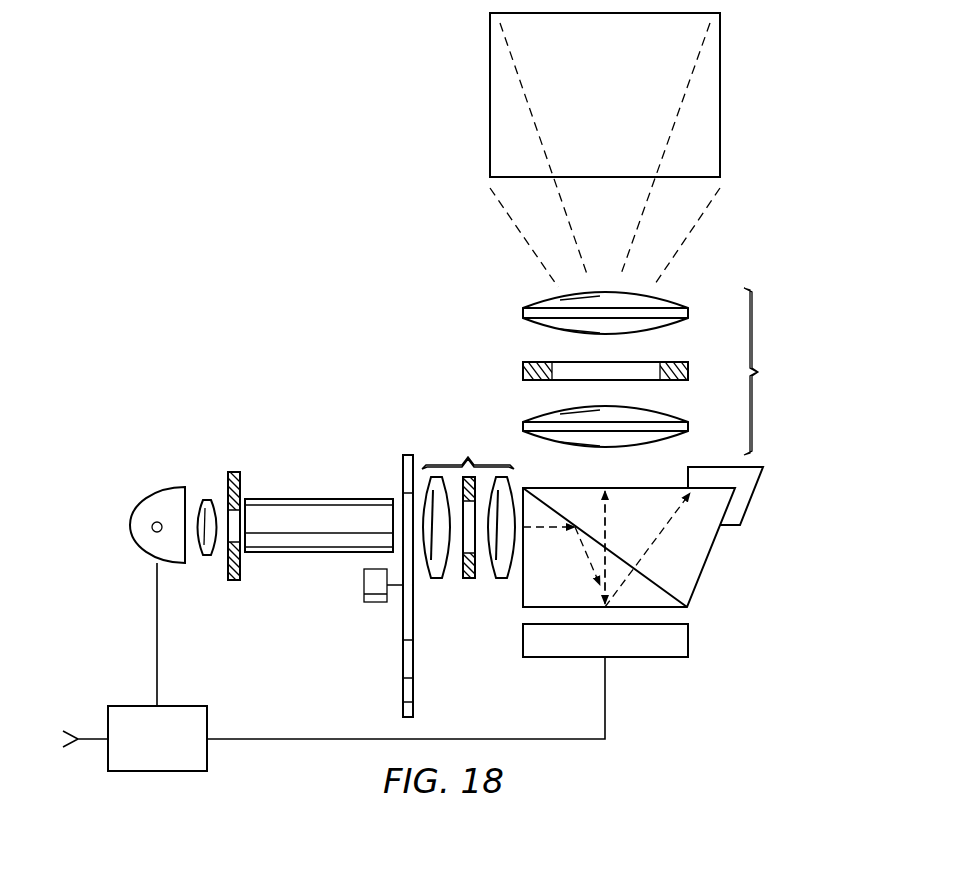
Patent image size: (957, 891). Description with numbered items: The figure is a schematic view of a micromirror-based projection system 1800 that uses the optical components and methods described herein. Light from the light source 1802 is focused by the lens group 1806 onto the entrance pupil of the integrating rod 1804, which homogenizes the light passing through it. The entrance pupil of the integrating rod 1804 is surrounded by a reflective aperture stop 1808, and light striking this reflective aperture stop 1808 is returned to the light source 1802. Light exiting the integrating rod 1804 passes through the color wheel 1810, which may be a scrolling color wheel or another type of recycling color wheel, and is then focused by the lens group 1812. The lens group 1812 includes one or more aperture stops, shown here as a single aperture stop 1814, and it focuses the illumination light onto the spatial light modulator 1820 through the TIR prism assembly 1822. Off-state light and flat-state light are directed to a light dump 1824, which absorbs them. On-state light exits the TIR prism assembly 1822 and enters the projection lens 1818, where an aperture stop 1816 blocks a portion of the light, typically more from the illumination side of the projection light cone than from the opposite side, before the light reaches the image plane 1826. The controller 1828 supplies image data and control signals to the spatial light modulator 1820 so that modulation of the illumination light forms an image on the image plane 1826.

The micromirror-based projection system 1800 is at (258, 172).
The light source 1802 is at (158, 492).
The integrating rod 1804 is at (318, 498).
The lens group 1806 is at (205, 557).
The reflective aperture stop 1808 is at (232, 470).
The color wheel 1810 is at (403, 668).
The lens group 1812 is at (468, 526).
The aperture stop 1814 is at (467, 579).
The aperture stop 1816 is at (523, 370).
The projection lens 1818 is at (631, 371).
The spatial light modulator 1820 is at (690, 640).
The TIR prism assembly 1822 is at (707, 575).
The light dump 1824 is at (750, 500).
The image plane 1826 is at (720, 92).
The controller 1828 is at (185, 752).